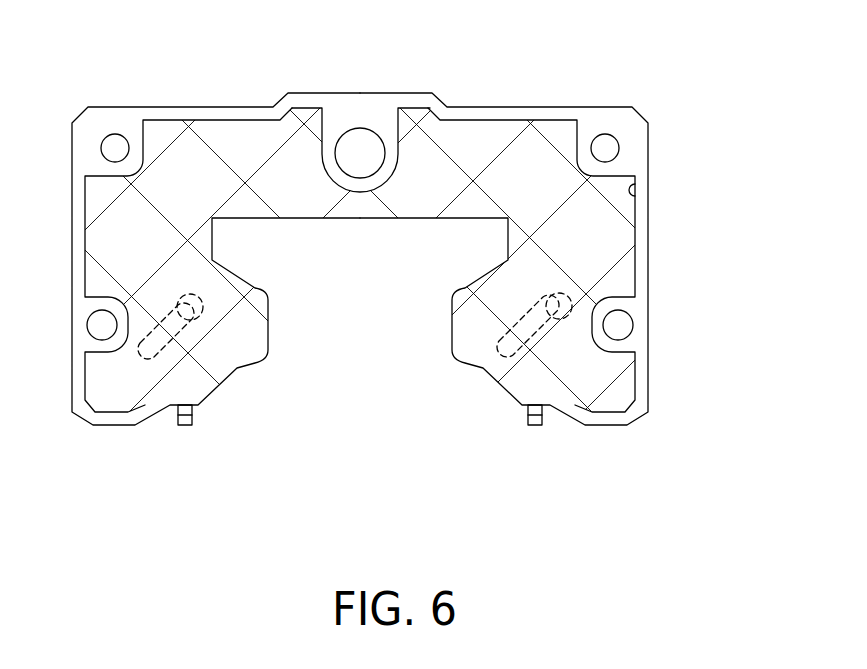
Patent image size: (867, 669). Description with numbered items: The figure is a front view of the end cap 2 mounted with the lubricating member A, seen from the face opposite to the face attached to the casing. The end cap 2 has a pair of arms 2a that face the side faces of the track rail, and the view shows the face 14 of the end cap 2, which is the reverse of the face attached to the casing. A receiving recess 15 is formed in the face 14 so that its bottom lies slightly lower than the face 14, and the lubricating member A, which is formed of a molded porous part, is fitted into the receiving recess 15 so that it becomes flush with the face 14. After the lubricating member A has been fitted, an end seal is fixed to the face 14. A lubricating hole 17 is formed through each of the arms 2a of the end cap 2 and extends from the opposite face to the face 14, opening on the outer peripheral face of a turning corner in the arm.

The end cap 2 is at (618, 117).
The arms 2a is at (107, 418).
The face 14 is at (378, 107).
The receiving recess 15 is at (637, 186).
The lubricating hole 17 is at (207, 325).
The lubricating member A is at (600, 243).